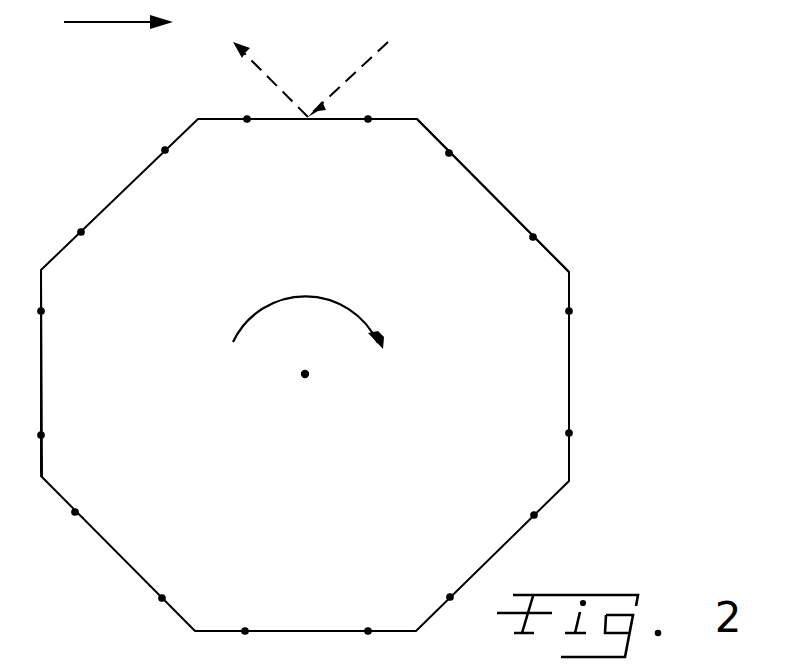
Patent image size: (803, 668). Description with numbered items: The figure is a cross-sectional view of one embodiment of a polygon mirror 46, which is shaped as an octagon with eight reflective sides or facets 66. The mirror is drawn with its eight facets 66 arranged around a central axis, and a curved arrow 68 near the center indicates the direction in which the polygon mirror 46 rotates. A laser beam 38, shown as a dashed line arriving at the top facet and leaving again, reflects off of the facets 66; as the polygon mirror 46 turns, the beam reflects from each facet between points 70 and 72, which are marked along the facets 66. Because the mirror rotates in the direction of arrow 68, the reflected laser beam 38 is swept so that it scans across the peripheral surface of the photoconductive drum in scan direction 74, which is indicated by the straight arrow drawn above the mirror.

The polygon mirror 46 is at (332, 511).
The facets 66 is at (41, 370).
The point 72 is at (247, 119).
The point 70 is at (368, 119).
The arrow 68 is at (313, 294).
The laser beam 38 is at (342, 90).
The scan direction 74 is at (112, 22).